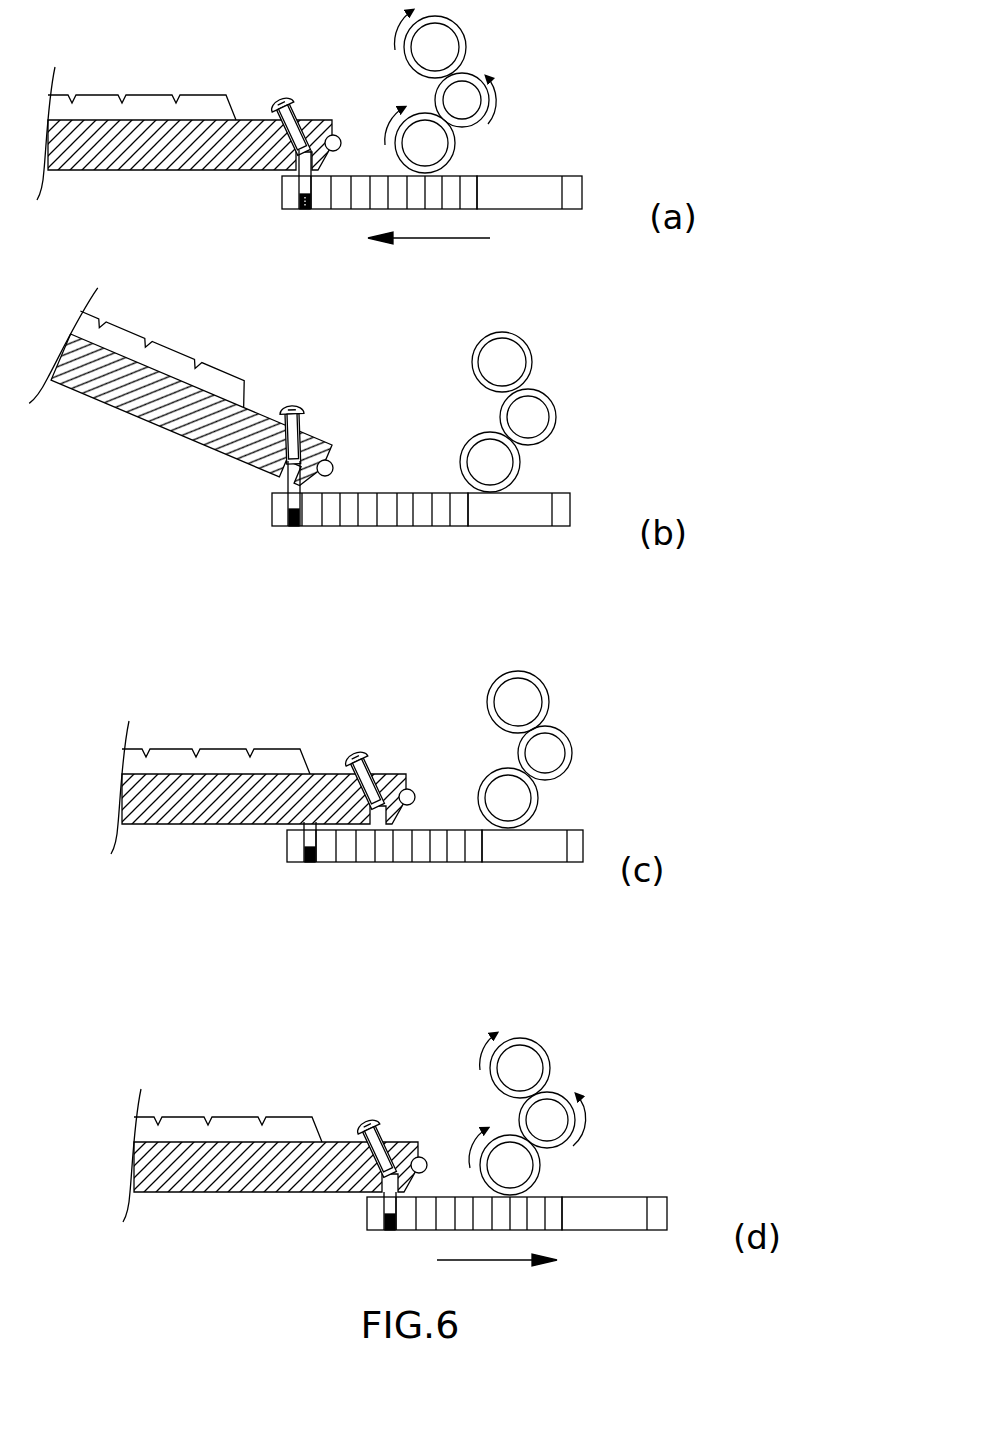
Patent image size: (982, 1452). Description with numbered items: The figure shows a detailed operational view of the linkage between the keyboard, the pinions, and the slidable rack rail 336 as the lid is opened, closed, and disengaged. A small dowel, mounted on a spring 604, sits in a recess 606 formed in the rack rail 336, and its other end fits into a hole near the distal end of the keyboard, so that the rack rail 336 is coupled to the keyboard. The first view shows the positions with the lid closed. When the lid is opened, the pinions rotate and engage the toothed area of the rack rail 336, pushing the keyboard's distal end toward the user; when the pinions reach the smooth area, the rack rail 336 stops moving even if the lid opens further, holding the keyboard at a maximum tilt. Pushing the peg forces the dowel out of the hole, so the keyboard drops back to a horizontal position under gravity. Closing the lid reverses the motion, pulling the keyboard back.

The rack rail 336 is at (510, 211).
The spring 604 is at (303, 203).
The recess 606 is at (312, 205).